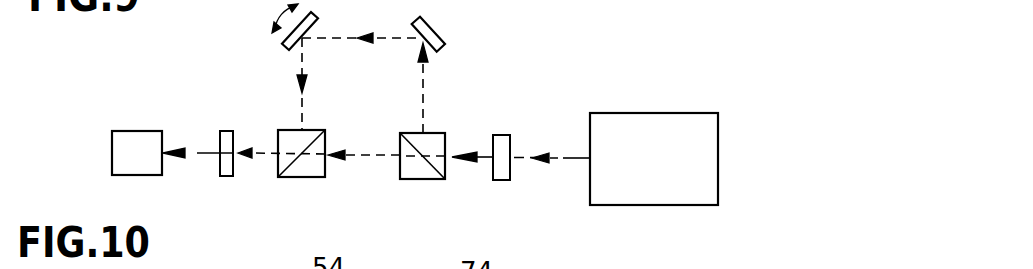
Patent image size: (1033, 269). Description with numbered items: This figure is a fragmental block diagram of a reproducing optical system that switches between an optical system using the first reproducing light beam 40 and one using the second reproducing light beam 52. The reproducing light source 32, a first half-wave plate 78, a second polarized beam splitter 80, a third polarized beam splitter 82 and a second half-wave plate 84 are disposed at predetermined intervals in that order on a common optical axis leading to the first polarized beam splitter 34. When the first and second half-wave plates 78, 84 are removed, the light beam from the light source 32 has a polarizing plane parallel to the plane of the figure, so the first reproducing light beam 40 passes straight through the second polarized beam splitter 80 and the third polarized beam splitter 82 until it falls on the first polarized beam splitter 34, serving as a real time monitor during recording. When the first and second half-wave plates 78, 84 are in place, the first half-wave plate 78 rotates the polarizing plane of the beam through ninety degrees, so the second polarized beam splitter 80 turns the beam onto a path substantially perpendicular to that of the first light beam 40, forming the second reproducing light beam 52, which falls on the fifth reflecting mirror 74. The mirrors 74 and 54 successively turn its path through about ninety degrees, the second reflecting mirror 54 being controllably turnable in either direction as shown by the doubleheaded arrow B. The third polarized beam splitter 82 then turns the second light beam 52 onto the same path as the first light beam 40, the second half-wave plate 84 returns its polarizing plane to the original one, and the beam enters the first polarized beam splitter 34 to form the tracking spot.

The reproducing light source 32 is at (719, 114).
The first polarized beam splitter 34 is at (166, 130).
The first reproducing light beam 40 is at (373, 157).
The second reproducing light beam 52 is at (425, 78).
The second reflecting mirror 54 is at (322, 20).
The fifth reflecting mirror 74 is at (447, 36).
The first half-wave plate 78 is at (512, 138).
The second polarized beam splitter 80 is at (446, 136).
The third polarized beam splitter 82 is at (325, 132).
The second half-wave plate 84 is at (236, 131).
The doubleheaded arrow B is at (280, 16).